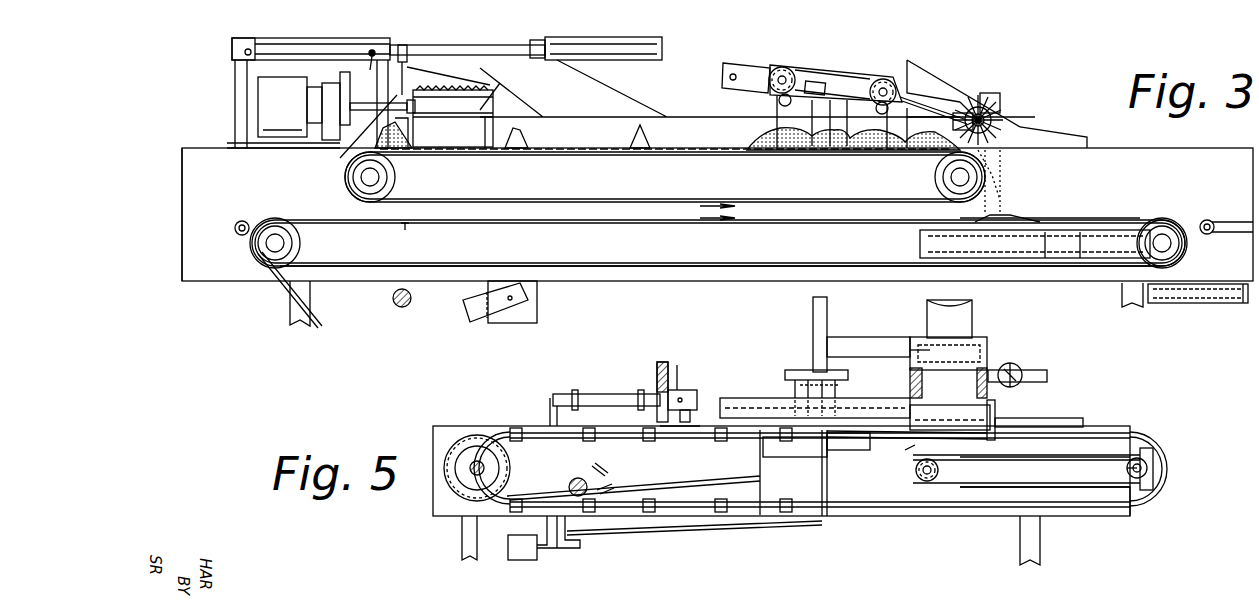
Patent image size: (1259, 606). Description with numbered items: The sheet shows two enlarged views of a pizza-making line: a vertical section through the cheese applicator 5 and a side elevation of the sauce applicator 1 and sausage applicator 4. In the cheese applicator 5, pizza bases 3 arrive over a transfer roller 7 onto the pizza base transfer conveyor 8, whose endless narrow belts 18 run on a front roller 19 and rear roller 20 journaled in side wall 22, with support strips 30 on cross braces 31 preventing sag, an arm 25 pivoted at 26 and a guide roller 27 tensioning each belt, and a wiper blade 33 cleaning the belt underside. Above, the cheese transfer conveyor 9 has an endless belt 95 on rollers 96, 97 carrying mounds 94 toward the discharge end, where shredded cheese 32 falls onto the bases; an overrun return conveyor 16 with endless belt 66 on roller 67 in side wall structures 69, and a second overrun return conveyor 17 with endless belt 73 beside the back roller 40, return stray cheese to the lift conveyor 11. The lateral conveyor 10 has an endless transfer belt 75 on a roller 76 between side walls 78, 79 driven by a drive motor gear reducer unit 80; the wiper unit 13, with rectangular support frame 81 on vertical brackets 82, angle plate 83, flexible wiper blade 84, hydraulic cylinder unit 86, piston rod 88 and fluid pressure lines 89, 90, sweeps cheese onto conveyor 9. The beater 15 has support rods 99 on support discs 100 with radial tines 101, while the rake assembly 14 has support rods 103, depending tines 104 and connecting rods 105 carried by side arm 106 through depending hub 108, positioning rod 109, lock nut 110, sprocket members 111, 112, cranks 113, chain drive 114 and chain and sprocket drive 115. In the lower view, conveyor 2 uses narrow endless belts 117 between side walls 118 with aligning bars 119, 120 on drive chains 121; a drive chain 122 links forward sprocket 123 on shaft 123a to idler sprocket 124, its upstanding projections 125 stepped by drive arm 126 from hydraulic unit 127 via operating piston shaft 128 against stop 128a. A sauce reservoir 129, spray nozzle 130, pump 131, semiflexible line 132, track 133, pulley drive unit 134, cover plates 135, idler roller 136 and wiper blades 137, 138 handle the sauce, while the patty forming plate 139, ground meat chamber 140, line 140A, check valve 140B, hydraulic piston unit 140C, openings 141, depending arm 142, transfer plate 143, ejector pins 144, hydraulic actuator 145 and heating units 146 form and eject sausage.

In FIG. 5, the sauce applicator 1 is at (698, 385).
In FIG. 5, the conveyor 2 is at (478, 435).
In FIG. 3, the pizza bases 3 is at (1020, 222).
In FIG. 5, the sausage applicator 4 is at (980, 358).
In FIG. 3, the cheese applicator 5 is at (180, 283).
In FIG. 3, the transfer roller 7 is at (234, 226).
In FIG. 3, the pizza base transfer conveyor 8 is at (252, 277).
In FIG. 3, the cheese transfer conveyor 9 is at (345, 187).
In FIG. 3, the lateral conveyor 10 is at (494, 85).
In FIG. 3, the lift conveyor 11 is at (608, 92).
In FIG. 3, the wiper unit 13 is at (382, 110).
In FIG. 3, the rake assembly 14 is at (845, 62).
In FIG. 3, the beater 15 is at (990, 110).
In FIG. 3, the overrun return conveyor 16 is at (1098, 224).
In FIG. 3, the overrun return conveyor 17 is at (1208, 303).
In FIG. 3, the endless narrow belts 18 is at (615, 264).
In FIG. 3, the front roller 19 is at (1188, 250).
In FIG. 3, the rear roller 20 is at (302, 246).
In FIG. 3, the side wall 22 is at (182, 174).
In FIG. 3, the arm 25 is at (466, 322).
In FIG. 3, the pivot 26 is at (512, 298).
In FIG. 3, the guide roller 27 is at (400, 308).
In FIG. 3, the support strips 30 is at (512, 225).
In FIG. 3, the cross braces 31 is at (405, 232).
In FIG. 3, the shredded cheese 32 is at (990, 178).
In FIG. 3, the wiper blade 33 is at (820, 222).
In FIG. 3, the back roller 40 is at (1212, 220).
In FIG. 3, the endless belt 66 is at (1048, 258).
In FIG. 3, the roller 67 is at (1090, 258).
In FIG. 3, the side wall structures 69 is at (920, 242).
In FIG. 3, the endless belt 73 is at (1243, 303).
In FIG. 3, the endless transfer belt 75 is at (455, 122).
In FIG. 3, the roller 76 is at (493, 100).
In FIG. 3, the side wall 78 is at (410, 146).
In FIG. 3, the side wall 79 is at (485, 150).
In FIG. 3, the drive motor gear reducer unit 80 is at (268, 106).
In FIG. 3, the rectangular support frame 81 is at (662, 50).
In FIG. 3, the vertical brackets 82 is at (235, 76).
In FIG. 3, the angle plate 83 is at (412, 66).
In FIG. 3, the flexible wiper blade 84 is at (404, 80).
In FIG. 3, the hydraulic cylinder unit 86 is at (250, 40).
In FIG. 3, the piston rod 88 is at (560, 48).
In FIG. 3, the fluid pressure line 89 is at (240, 52).
In FIG. 3, the fluid pressure line 90 is at (370, 99).
In FIG. 3, the mounds 94 is at (630, 138).
In FIG. 3, the endless belt 95 is at (690, 160).
In FIG. 3, the roller 96 is at (395, 180).
In FIG. 3, the drive roller 97 is at (934, 180).
In FIG. 3, the support rods 99 is at (995, 122).
In FIG. 3, the support discs 100 is at (990, 93).
In FIG. 3, the radial tines 101 is at (968, 112).
In FIG. 3, the support rod 103 is at (833, 105).
In FIG. 3, the depending tines 104 is at (848, 148).
In FIG. 3, the connecting rods 105 is at (827, 88).
In FIG. 3, the side arm 106 is at (760, 68).
In FIG. 3, the depending hub 108 is at (985, 150).
In FIG. 3, the positioning rod 109 is at (818, 150).
In FIG. 3, the lock nut 110 is at (832, 74).
In FIG. 3, the sprocket member 111 is at (784, 66).
In FIG. 3, the sprocket member 112 is at (905, 64).
In FIG. 3, the cranks 113 is at (770, 108).
In FIG. 3, the chain drive 114 is at (885, 78).
In FIG. 3, the chain and sprocket drive 115 is at (945, 95).
In FIG. 5, the narrow endless belts 117 is at (758, 440).
In FIG. 5, the side walls 118 is at (850, 516).
In FIG. 5, the aligning bar 119 is at (645, 440).
In FIG. 5, the aligning bar 120 is at (740, 440).
In FIG. 5, the drive chains 121 is at (680, 440).
In FIG. 5, the drive chain 122 is at (1022, 487).
In FIG. 5, the forward sprocket 123 is at (1150, 474).
In FIG. 5, the shaft 123a is at (1127, 470).
In FIG. 5, the idler sprocket 124 is at (918, 478).
In FIG. 5, the upstanding projections 125 is at (985, 455).
In FIG. 5, the drive arm 126 is at (978, 462).
In FIG. 5, the hydraulic unit 127 is at (845, 450).
In FIG. 5, the operating piston shaft 128 is at (910, 440).
In FIG. 5, the stop 128a is at (912, 452).
In FIG. 5, the sauce reservoir 129 is at (655, 527).
In FIG. 5, the spray nozzle 130 is at (718, 398).
In FIG. 5, the pump 131 is at (525, 560).
In FIG. 5, the semiflexible line 132 is at (620, 394).
In FIG. 5, the track 133 is at (662, 362).
In FIG. 5, the pulley drive unit 134 is at (677, 365).
In FIG. 5, the cover plates 135 is at (755, 476).
In FIG. 5, the idler roller 136 is at (570, 480).
In FIG. 5, the wiper blade 137 is at (595, 467).
In FIG. 5, the wiper blade 138 is at (608, 494).
In FIG. 5, the patty forming plate 139 is at (960, 398).
In FIG. 5, the ground meat chamber 140 is at (987, 358).
In FIG. 5, the line 140A is at (1047, 376).
In FIG. 5, the check valve 140B is at (1022, 368).
In FIG. 5, the hydraulic piston unit 140C is at (972, 305).
In FIG. 5, the openings 141 is at (845, 408).
In FIG. 5, the depending arm 142 is at (996, 412).
In FIG. 5, the transfer plate 143 is at (790, 370).
In FIG. 5, the ejector pins 144 is at (848, 375).
In FIG. 5, the hydraulic actuator 145 is at (827, 310).
In FIG. 5, the heating units 146 is at (795, 380).